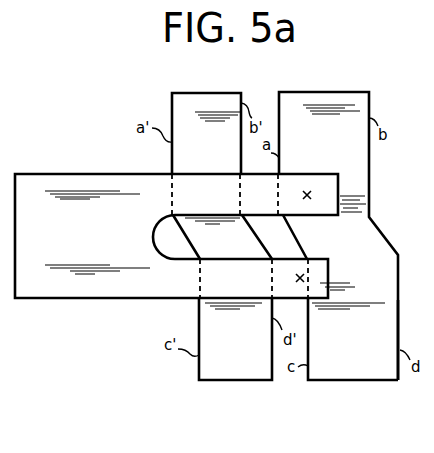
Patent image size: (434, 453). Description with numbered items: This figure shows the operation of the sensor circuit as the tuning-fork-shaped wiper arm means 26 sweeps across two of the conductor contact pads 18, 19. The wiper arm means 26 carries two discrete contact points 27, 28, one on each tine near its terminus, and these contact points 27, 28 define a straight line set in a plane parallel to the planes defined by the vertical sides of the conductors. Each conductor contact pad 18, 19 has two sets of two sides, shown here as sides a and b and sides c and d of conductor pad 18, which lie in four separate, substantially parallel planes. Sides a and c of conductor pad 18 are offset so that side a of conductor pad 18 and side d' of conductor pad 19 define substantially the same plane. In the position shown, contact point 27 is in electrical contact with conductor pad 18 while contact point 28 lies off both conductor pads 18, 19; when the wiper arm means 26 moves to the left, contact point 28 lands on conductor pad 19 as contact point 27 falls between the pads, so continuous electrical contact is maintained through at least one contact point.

The wiper arm means 26 is at (90, 253).
The contact point 27 is at (309, 190).
The contact point 28 is at (303, 278).
The conductor contact pad 19 is at (243, 363).
The conductor contact pad 18 is at (365, 363).